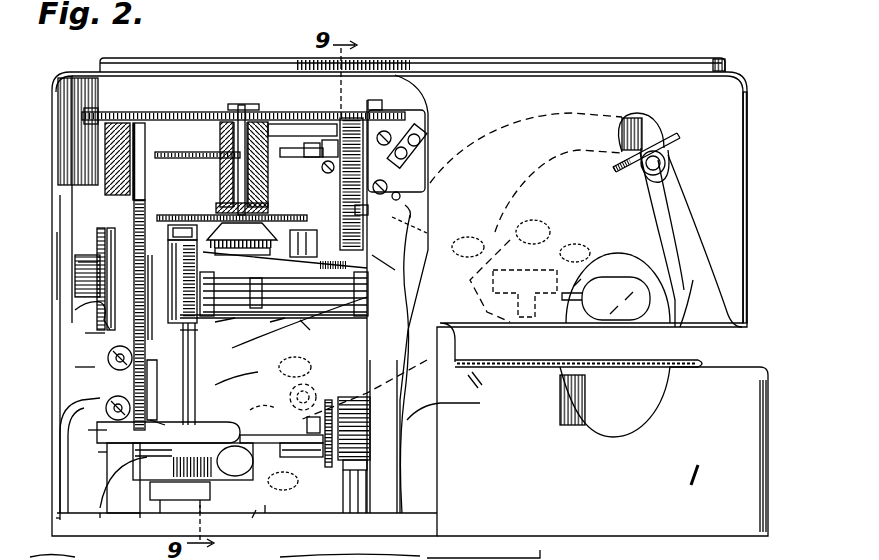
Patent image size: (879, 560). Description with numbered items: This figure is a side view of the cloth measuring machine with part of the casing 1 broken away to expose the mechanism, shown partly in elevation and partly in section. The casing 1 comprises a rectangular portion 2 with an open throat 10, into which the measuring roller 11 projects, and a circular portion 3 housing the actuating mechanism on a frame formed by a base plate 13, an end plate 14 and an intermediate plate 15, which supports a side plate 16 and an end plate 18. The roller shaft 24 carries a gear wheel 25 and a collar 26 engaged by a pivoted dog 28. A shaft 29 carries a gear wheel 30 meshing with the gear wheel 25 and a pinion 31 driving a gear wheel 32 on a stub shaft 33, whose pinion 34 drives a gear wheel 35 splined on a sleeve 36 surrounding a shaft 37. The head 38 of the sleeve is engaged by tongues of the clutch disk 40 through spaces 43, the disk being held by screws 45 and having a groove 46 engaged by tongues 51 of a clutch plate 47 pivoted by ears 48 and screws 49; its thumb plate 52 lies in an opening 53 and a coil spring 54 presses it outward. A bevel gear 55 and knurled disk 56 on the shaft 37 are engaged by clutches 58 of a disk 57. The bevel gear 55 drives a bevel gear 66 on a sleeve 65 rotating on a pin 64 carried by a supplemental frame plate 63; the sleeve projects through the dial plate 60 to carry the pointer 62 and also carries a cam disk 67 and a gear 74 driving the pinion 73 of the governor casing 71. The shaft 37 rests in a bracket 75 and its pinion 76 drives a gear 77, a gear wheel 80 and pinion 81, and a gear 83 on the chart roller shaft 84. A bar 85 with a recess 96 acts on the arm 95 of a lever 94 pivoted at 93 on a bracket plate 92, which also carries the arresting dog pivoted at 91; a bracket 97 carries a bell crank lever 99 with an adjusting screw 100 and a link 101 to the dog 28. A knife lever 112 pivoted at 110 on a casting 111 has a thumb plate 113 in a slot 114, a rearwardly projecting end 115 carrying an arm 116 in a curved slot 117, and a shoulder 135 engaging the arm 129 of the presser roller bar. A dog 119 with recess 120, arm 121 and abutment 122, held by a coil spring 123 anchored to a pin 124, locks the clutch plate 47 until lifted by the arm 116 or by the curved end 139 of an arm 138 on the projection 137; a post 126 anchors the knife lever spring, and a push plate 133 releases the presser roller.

The casing 1 is at (735, 158).
The rectangular portion 2 is at (497, 82).
The circular portion 3 is at (177, 67).
The open space or throat 10 is at (705, 343).
The measuring roller 11 is at (590, 362).
The base plate 13 is at (247, 523).
The end plate 14 is at (117, 166).
The intermediate plate 15 is at (387, 468).
The side plate 16 is at (690, 325).
The end plate 18 is at (87, 434).
The roller shaft 24 is at (290, 395).
The gear wheel 25 is at (322, 470).
The collar 26 is at (375, 437).
The pivoted dog 28 is at (367, 487).
The shaft 29 is at (281, 454).
The gear wheel 30 is at (265, 521).
The pinion 31 is at (109, 479).
The gear wheel 32 is at (163, 337).
The stub shaft 33 is at (196, 340).
The pinion 34 is at (164, 411).
The gear wheel 35 is at (137, 200).
The sleeve 36 is at (152, 260).
The shaft 37 is at (270, 330).
The head 38 is at (75, 272).
The clutch disk 40 is at (78, 290).
The spaces 43 is at (100, 252).
The screws 45 is at (57, 232).
The circumferential groove 46 is at (85, 333).
The plate 47 is at (87, 316).
The ears 48 is at (75, 367).
The screws 49 is at (107, 358).
The tongues 51 is at (180, 280).
The thumb plate 52 is at (87, 454).
The opening 53 is at (57, 518).
The coil spring 54 is at (211, 351).
The bevel gear 55 is at (274, 285).
The knurled disk 56 is at (235, 328).
The disk 57 is at (183, 325).
The clutches 58 is at (225, 222).
The dial plate 60 is at (187, 115).
The pointer 62 is at (335, 112).
The supplemental frame plate 63 is at (317, 251).
The pin 64 is at (240, 175).
The sleeve 65 is at (295, 140).
The bevel gear 66 is at (305, 157).
The cam disk 67 is at (195, 153).
The governor casing 71 is at (228, 477).
The pinion 73 is at (142, 215).
The gear 74 is at (180, 215).
The bracket 75 is at (388, 259).
The pinion 76 is at (411, 294).
The gear 77 is at (412, 216).
The gear wheel 80 is at (378, 207).
The pinion 81 is at (408, 186).
The gear 83 is at (387, 176).
The shaft 84 is at (397, 146).
The bar 85 is at (405, 212).
The pivot 91 is at (340, 132).
The bracket plate 92 is at (280, 155).
The pivot 93 is at (322, 148).
The lever 94 is at (335, 112).
The arm 95 is at (554, 191).
The recess 96 is at (427, 215).
The bracket 97 is at (299, 327).
The bell crank lever 99 is at (293, 333).
The adjusting screw 100 is at (326, 173).
The link 101 is at (384, 306).
The pivot 110 is at (295, 367).
The casting 111 is at (459, 408).
The knife lever 112 is at (591, 220).
The thumb plate 113 is at (665, 151).
The slot 114 is at (705, 241).
The rearwardly projecting end 115 is at (283, 481).
The arm 116 is at (198, 471).
The curved slot 117 is at (251, 408).
The dog 119 is at (107, 482).
The recess 120 is at (78, 455).
The arm 121 is at (245, 440).
The abutment 122 is at (105, 398).
The coil spring 123 is at (104, 525).
The pin 124 is at (141, 525).
The post 126 is at (180, 510).
The arm 129 is at (575, 253).
The push plate 133 is at (605, 282).
The shoulder 135 is at (468, 247).
The projection 137 is at (405, 330).
The arm 138 is at (236, 383).
The curved end 139 is at (252, 518).